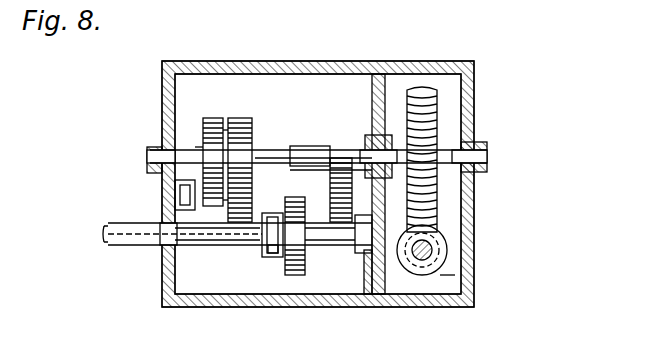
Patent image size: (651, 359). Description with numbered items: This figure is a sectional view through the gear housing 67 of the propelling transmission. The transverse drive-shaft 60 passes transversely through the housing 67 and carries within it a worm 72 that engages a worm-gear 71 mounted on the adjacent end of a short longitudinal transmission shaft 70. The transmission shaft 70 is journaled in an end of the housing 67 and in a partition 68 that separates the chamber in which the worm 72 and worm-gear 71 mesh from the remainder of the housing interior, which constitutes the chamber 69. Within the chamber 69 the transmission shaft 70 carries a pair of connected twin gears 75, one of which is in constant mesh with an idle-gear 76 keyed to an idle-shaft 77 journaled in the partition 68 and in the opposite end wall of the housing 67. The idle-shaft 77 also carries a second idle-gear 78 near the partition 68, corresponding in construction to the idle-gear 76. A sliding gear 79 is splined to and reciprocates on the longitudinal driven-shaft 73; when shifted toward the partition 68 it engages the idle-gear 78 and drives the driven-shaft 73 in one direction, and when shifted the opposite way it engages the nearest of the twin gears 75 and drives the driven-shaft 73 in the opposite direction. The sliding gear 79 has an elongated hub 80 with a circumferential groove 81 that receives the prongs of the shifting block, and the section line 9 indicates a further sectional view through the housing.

The section line 9- 9 is at (448, 95).
The transverse shaft 60 is at (446, 242).
The housing 67 is at (352, 62).
The partition 68 is at (373, 97).
The chamber 69 is at (218, 92).
The transmission shaft 70 is at (290, 155).
The worm-gear 71 is at (440, 128).
The worm 72 is at (458, 273).
The driven-shaft 73 is at (140, 245).
The twin gears 75 is at (230, 120).
The idle-gear 76 is at (175, 215).
The idle-shaft 77 is at (267, 165).
The idle-gear 78 is at (363, 168).
The sliding gear 79 is at (298, 278).
The elongated hub 80 is at (268, 250).
The circumferential groove 81 is at (268, 262).